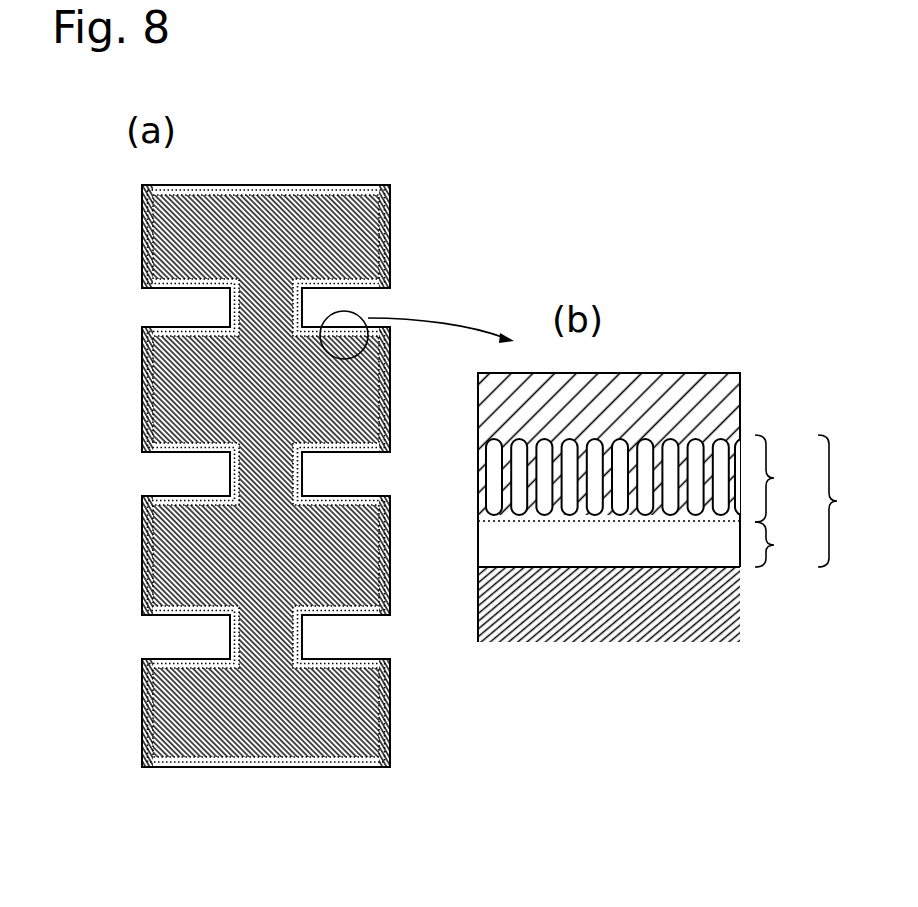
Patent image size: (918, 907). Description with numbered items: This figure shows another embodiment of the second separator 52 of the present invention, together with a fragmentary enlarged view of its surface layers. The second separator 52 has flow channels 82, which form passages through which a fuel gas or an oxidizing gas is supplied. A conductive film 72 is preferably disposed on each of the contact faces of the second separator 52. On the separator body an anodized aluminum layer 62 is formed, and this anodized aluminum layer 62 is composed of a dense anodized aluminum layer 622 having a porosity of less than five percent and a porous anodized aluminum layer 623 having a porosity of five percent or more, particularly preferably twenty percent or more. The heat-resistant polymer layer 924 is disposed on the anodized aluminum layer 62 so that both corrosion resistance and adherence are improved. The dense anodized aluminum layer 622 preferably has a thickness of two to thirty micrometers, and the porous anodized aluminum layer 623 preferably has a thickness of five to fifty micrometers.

The conductive film 72 is at (134, 386).
The second separator 52 is at (225, 562).
The heat-resistant polymer layer 924 is at (180, 320).
The anodized aluminum layer 62 is at (205, 276).
The porous anodized aluminum layer 623 is at (650, 478).
The dense anodized aluminum layer 622 is at (646, 544).
The flow channel 82 is at (266, 474).